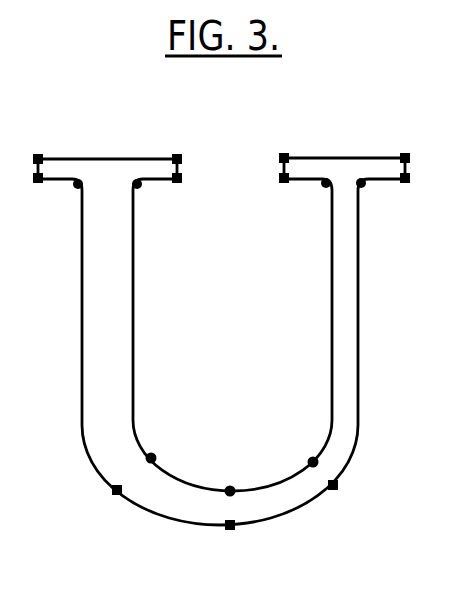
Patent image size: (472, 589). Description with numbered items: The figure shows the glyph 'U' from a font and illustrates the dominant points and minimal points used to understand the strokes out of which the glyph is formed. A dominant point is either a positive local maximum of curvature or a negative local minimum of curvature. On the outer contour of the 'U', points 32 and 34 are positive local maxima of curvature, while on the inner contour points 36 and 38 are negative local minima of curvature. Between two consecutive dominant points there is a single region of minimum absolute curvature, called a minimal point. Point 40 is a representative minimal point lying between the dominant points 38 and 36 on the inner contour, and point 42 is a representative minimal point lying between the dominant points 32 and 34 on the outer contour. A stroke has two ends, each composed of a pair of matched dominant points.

The positive local maximum of curvature 32 is at (115, 492).
The positive local maximum of curvature 34 is at (335, 487).
The negative local minimum of curvature 36 is at (313, 460).
The negative local minimum of curvature 38 is at (152, 456).
The minimal point 40 is at (231, 489).
The minimal point 42 is at (232, 527).